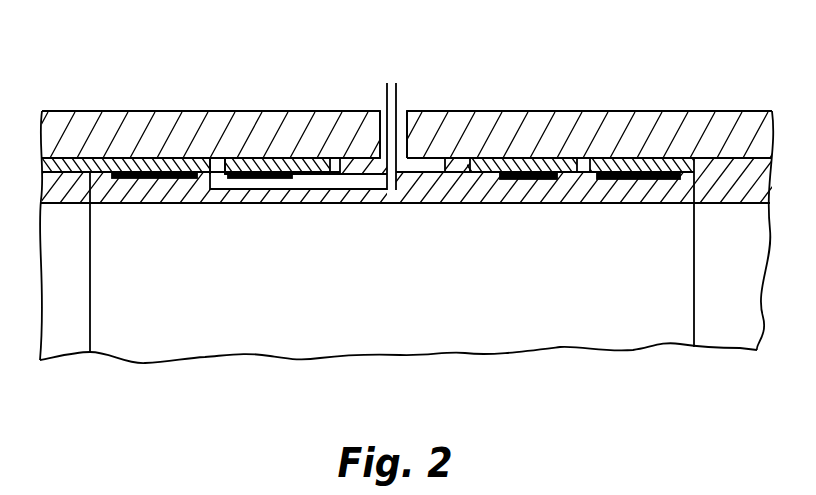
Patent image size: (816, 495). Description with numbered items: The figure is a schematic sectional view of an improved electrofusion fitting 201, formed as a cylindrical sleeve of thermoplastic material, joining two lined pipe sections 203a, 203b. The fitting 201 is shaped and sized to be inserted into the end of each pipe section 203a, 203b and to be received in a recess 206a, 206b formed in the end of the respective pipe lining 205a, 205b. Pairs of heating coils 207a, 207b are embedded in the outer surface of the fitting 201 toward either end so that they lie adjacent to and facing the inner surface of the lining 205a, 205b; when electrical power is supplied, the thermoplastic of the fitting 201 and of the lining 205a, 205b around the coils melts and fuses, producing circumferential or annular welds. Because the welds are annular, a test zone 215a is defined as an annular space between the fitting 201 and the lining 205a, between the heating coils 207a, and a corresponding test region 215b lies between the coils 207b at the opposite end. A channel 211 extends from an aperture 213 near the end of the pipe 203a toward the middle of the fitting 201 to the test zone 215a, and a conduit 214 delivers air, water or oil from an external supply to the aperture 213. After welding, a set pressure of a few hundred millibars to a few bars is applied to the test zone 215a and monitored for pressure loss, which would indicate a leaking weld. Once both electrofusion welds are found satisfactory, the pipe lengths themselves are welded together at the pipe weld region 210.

The electrofusion fitting 201 is at (425, 192).
The lined pipe section 203a is at (257, 123).
The lined pipe section 203b is at (603, 127).
The pipe lining 205a is at (66, 166).
The pipe lining 205b is at (715, 160).
The recess 206a is at (93, 187).
The recess 206b is at (696, 185).
The heating coils 207a is at (258, 180).
The heating coils 207b is at (633, 181).
The pipe weld region 210 is at (400, 125).
The channel 211 is at (297, 179).
The aperture 213 is at (387, 192).
The conduit 214 is at (388, 102).
The test zone 215a is at (211, 170).
The test region 215b is at (575, 173).